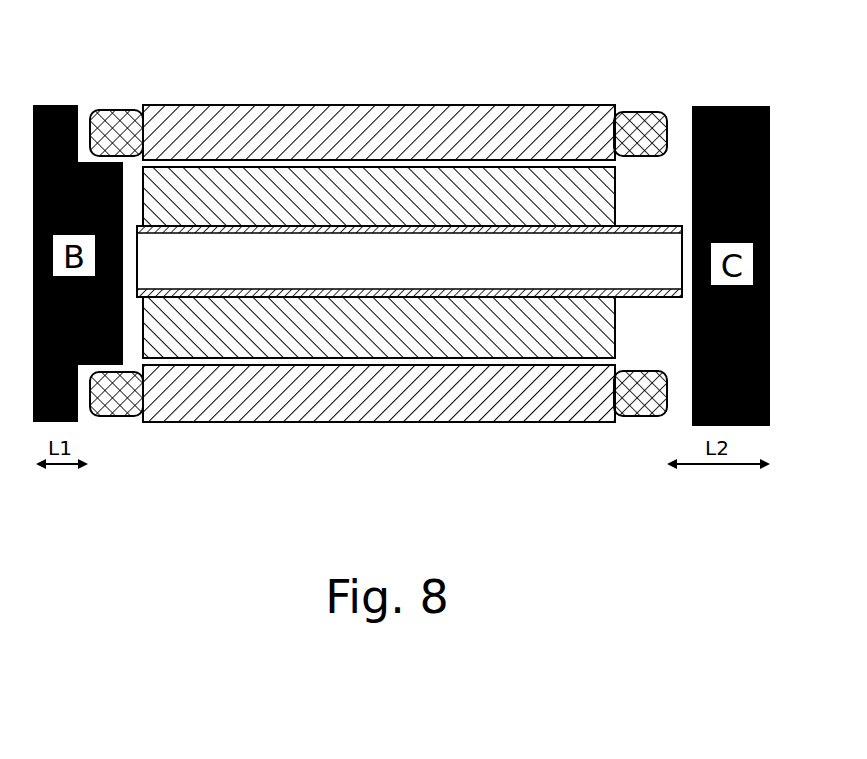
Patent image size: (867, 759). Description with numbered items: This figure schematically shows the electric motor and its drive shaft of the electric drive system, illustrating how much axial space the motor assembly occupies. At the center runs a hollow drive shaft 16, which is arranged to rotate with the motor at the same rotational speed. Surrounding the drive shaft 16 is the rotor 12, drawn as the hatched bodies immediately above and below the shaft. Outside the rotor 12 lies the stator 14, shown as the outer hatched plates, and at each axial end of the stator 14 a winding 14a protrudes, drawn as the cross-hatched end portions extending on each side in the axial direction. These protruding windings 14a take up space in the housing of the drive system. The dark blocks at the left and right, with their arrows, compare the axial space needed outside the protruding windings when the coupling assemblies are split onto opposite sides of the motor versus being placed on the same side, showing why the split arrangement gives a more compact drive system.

The rotor 12 is at (416, 337).
The stator 14 is at (398, 98).
The winding 14a is at (117, 114).
The hollow drive shaft 16 is at (260, 297).